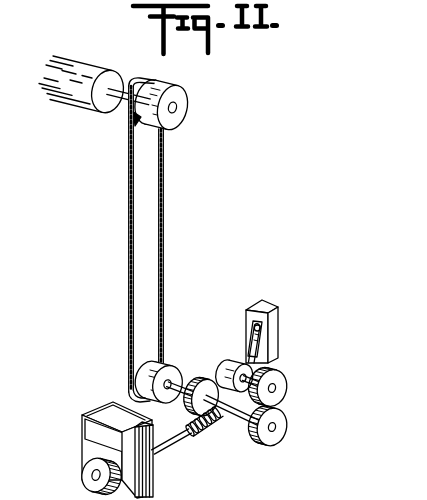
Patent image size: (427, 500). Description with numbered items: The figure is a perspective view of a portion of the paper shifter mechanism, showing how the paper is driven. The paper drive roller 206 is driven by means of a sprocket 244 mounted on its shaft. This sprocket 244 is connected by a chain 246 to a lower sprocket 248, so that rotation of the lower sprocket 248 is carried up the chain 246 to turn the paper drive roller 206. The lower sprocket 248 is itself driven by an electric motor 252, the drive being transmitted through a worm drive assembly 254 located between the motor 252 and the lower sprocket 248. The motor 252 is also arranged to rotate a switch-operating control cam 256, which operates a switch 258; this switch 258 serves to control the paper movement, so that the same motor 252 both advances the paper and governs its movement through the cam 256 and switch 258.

The paper drive roller 206 is at (57, 86).
The sprocket 244 is at (135, 123).
The chain 246 is at (165, 200).
The lower sprocket 248 is at (147, 362).
The electric motor 252 is at (80, 440).
The worm drive assembly 254 is at (213, 428).
The switch-operating control cam 256 is at (231, 366).
The switch 258 is at (277, 323).